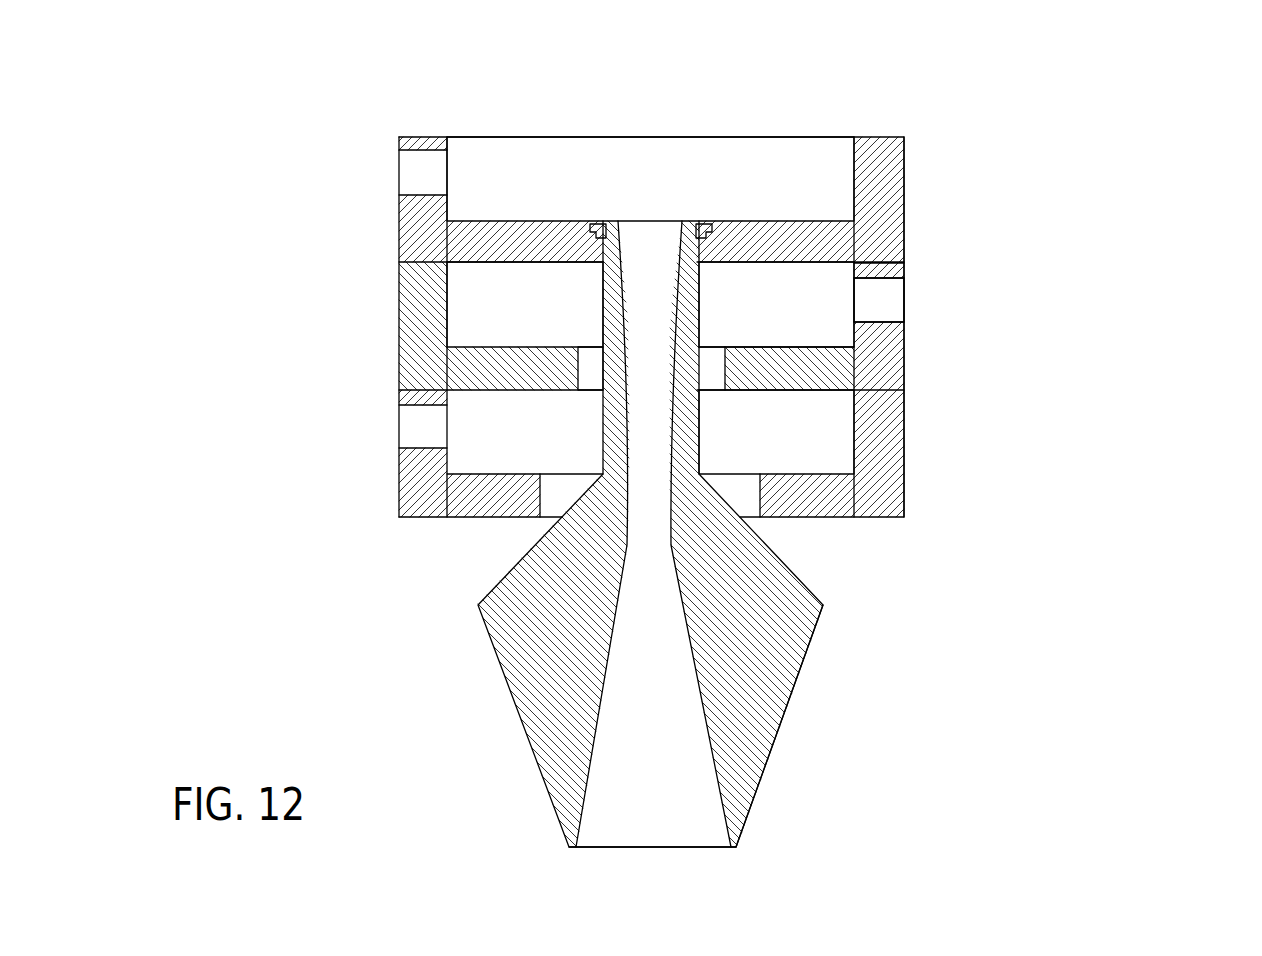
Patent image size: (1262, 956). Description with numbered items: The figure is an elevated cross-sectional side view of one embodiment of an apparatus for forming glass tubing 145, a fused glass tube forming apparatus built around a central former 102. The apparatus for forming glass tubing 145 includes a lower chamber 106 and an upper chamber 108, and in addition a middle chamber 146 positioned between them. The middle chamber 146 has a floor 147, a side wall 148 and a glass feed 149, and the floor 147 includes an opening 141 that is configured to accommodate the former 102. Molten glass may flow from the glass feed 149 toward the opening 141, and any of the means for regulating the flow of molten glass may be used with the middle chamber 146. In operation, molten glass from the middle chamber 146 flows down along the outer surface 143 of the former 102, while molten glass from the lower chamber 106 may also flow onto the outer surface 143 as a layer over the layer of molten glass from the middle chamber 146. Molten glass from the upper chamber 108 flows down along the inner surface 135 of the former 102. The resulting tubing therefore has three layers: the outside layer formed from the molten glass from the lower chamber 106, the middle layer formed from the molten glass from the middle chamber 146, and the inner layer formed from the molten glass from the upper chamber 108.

The former 102 is at (867, 703).
The lower chamber 106 is at (803, 455).
The upper chamber 108 is at (615, 172).
The inner surface 135 is at (577, 810).
The opening 141 is at (590, 373).
The outer surface 143 is at (778, 740).
The apparatus for forming glass tubing 145 is at (1077, 185).
The middle chamber 146 is at (383, 327).
The floor 147 is at (772, 348).
The side wall 148 is at (448, 317).
The glass feed 149 is at (880, 303).